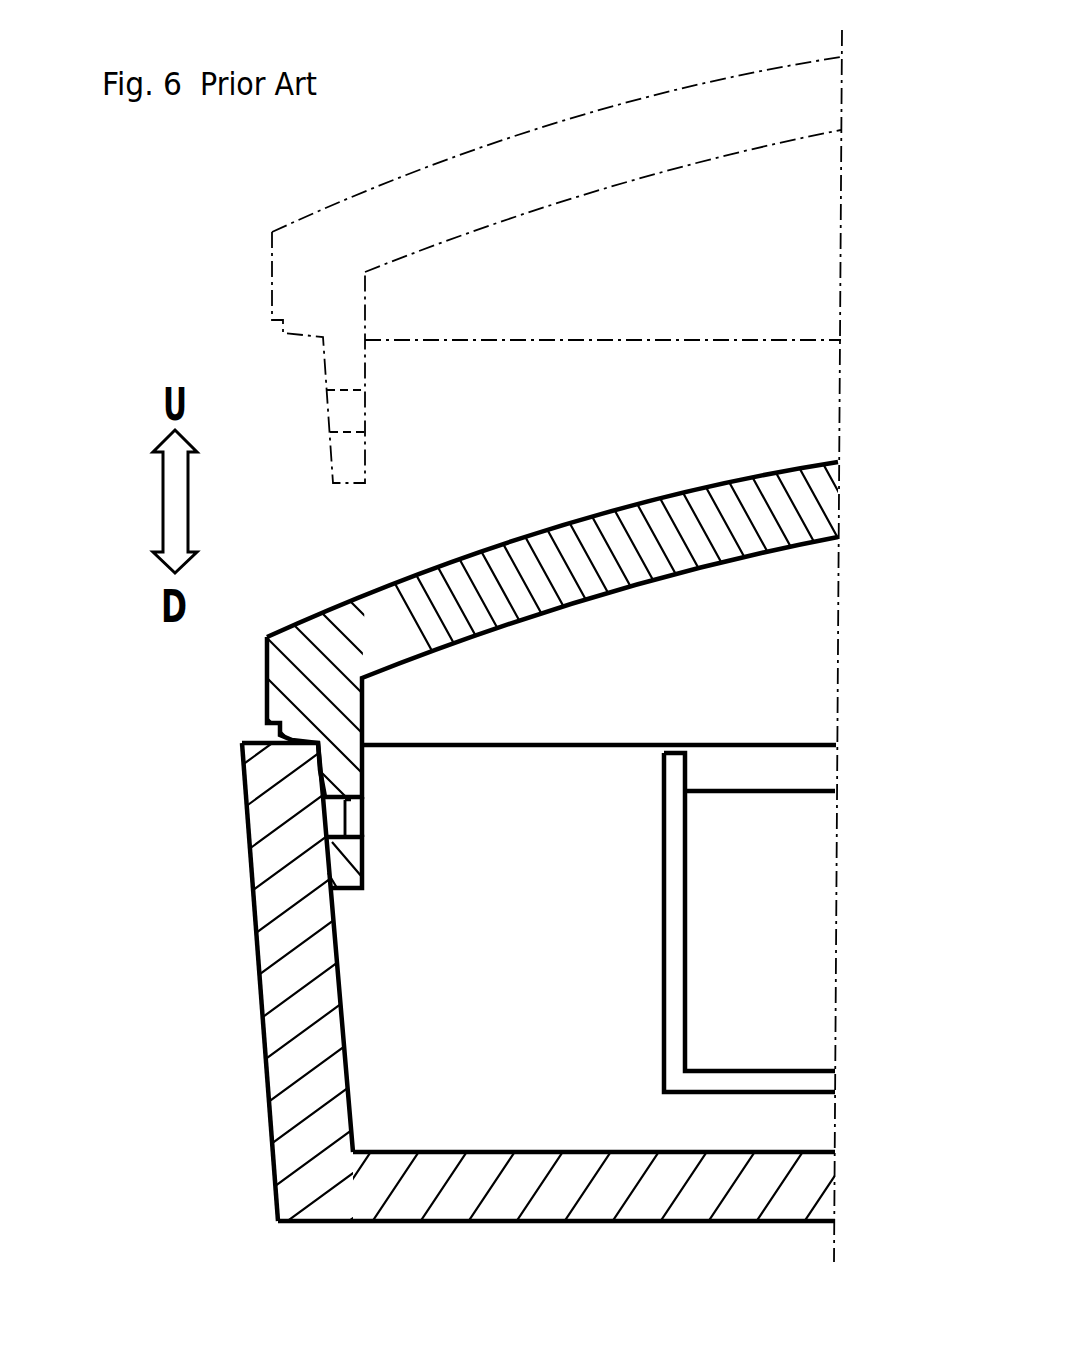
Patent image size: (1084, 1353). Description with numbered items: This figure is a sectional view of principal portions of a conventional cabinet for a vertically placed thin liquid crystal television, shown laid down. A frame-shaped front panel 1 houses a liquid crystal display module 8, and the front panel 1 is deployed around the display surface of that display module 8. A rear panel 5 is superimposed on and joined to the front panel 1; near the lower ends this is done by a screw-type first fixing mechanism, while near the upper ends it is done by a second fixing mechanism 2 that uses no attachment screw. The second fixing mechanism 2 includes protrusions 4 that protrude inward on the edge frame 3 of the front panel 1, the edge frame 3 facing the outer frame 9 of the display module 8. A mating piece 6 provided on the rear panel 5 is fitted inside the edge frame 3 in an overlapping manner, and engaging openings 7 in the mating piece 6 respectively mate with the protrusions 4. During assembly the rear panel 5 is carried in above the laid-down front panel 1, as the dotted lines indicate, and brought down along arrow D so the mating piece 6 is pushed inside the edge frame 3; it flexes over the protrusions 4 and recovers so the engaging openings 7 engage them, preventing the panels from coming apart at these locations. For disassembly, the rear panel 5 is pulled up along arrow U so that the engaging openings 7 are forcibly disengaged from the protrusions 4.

The front panel 1 is at (583, 1222).
The second fixing mechanism 2 is at (425, 893).
The edge frame 3 is at (258, 968).
The protrusions 4 is at (338, 818).
The rear panel 5 is at (725, 81).
The mating piece 6 is at (352, 890).
The engaging openings 7 is at (363, 800).
The liquid crystal display module 8 is at (805, 997).
The outer frame 9 is at (662, 995).